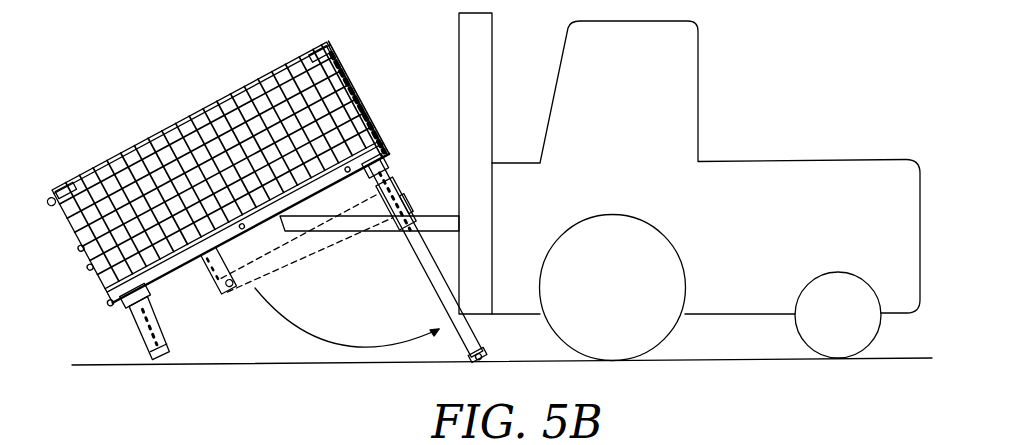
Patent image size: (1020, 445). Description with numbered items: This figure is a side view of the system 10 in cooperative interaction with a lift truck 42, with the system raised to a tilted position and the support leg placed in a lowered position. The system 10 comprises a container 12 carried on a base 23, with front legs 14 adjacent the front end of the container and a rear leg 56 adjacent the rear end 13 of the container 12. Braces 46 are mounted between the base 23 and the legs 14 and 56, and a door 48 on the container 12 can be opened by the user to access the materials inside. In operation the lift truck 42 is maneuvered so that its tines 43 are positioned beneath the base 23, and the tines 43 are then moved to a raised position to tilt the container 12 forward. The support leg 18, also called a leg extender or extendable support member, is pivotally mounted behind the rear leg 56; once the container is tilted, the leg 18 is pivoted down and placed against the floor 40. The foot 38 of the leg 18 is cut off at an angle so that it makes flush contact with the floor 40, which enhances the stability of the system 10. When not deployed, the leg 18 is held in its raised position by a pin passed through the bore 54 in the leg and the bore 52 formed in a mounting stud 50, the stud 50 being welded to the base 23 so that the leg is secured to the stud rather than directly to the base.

The system 10 is at (158, 92).
The container 12 is at (207, 123).
The rear end 13 is at (340, 88).
The front legs 14 is at (146, 340).
The support leg 18 is at (407, 240).
The base 23 is at (245, 242).
The foot 38 is at (483, 362).
The floor 40 is at (97, 367).
The lift truck 42 is at (740, 223).
The tines 43 is at (451, 222).
The braces 46 is at (152, 305).
The door 48 is at (50, 197).
The mounting stud 50 is at (209, 279).
The bore 52 is at (231, 290).
The bore 54 is at (482, 354).
The rear leg 56 is at (405, 212).